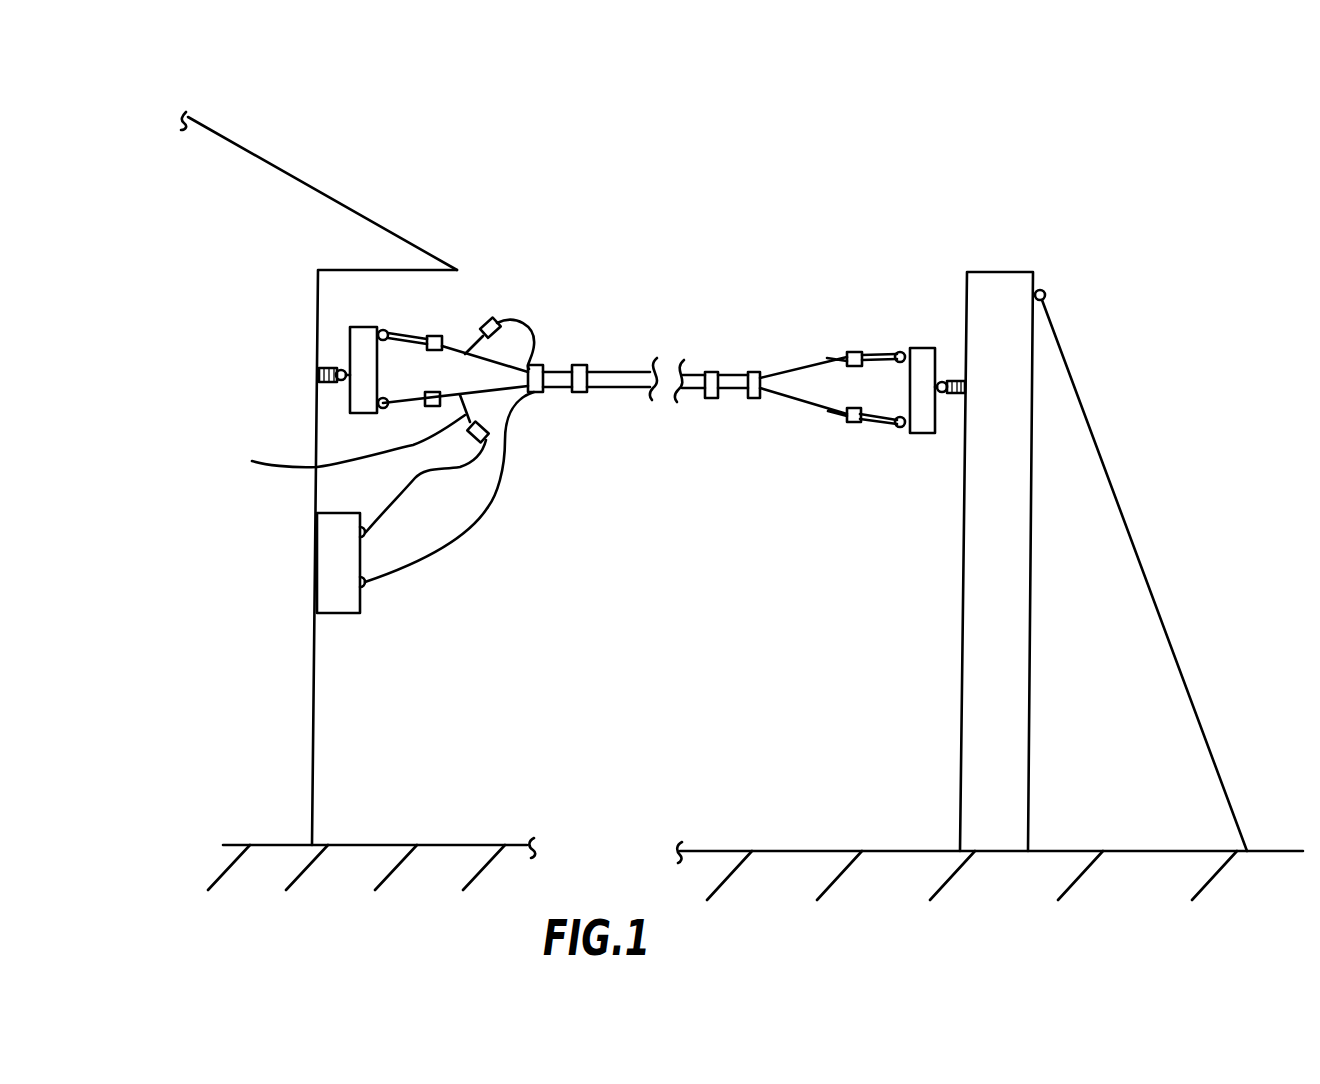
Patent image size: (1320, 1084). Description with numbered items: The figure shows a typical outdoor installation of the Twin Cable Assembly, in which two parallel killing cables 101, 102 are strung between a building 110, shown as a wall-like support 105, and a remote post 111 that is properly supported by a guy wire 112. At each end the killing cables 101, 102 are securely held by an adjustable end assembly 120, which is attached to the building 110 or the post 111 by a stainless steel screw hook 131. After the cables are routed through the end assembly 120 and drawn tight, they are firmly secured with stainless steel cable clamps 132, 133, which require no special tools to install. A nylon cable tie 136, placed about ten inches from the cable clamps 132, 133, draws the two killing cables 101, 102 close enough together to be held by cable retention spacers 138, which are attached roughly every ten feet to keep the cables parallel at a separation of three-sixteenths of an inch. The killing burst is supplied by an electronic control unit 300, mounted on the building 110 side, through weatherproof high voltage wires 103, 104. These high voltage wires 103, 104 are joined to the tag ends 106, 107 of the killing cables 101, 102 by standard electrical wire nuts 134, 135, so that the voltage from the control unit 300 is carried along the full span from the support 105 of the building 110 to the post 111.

The killing cable 101 is at (625, 372).
The killing cable 102 is at (688, 392).
The high voltage wire 103 is at (565, 538).
The high voltage wire 104 is at (410, 487).
The first support post 105 is at (314, 750).
The tag end 106 is at (463, 351).
The tag end 107 is at (331, 447).
The building 110 is at (300, 192).
The remote post 111 is at (1000, 297).
The guy wire 112 is at (1078, 394).
The adjustable end assembly 120 is at (363, 327).
The screw hook 131 is at (330, 367).
The cable clamp 132 is at (434, 336).
The cable clamp 133 is at (429, 405).
The wire nut 134 is at (497, 320).
The wire nut 135 is at (470, 441).
The nylon cable tie 136 is at (535, 393).
The cable retention spacer 138 is at (582, 393).
The electronic control unit 300 is at (328, 587).